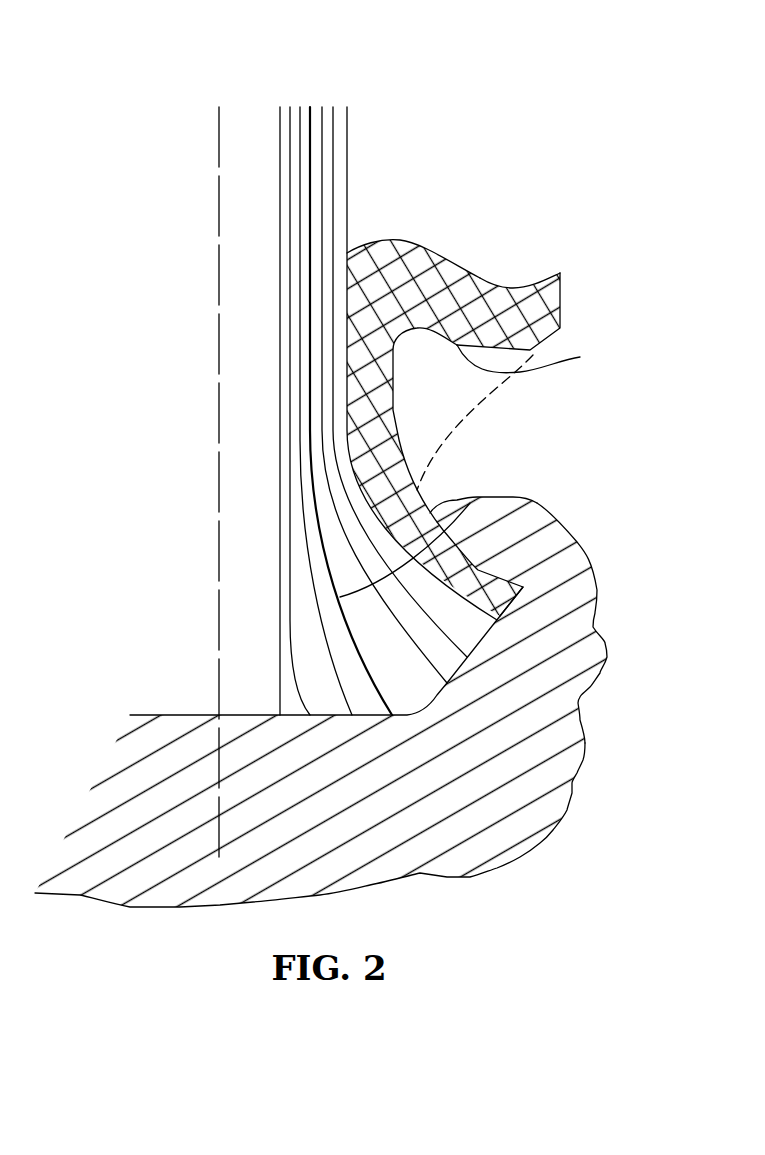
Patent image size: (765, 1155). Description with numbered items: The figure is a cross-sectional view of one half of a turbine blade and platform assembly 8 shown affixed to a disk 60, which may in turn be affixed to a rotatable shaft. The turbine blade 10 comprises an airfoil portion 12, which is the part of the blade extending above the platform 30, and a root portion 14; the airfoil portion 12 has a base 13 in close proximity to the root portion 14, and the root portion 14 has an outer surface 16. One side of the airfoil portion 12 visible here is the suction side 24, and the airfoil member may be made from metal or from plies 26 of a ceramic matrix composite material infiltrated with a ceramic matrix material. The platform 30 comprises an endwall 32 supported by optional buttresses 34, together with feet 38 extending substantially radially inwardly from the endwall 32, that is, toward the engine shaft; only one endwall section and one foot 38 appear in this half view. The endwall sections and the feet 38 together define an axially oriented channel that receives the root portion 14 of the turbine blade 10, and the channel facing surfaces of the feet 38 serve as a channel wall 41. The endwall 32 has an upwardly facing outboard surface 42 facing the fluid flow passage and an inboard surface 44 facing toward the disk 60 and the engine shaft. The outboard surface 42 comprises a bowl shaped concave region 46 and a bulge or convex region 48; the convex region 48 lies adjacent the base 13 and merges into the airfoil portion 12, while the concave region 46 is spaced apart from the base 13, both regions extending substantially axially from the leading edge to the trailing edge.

The turbine blade and platform assembly 8 is at (530, 118).
The turbine blade 10 is at (352, 126).
The airfoil portion 12 is at (345, 148).
The base 13 is at (345, 240).
The root portion 14 is at (307, 428).
The outer surface 16 is at (480, 562).
The suction side 24 is at (345, 173).
The plies 26 is at (300, 132).
The platform 30 is at (430, 401).
The endwall 32 is at (562, 273).
The buttresses 34 is at (497, 395).
The feet 38 is at (393, 410).
The channel wall 41 is at (340, 597).
The outboard surface 42 is at (443, 250).
The inboard surface 44 is at (580, 357).
The concave region 46 is at (513, 285).
The convex region 48 is at (405, 240).
The disk 60 is at (510, 765).